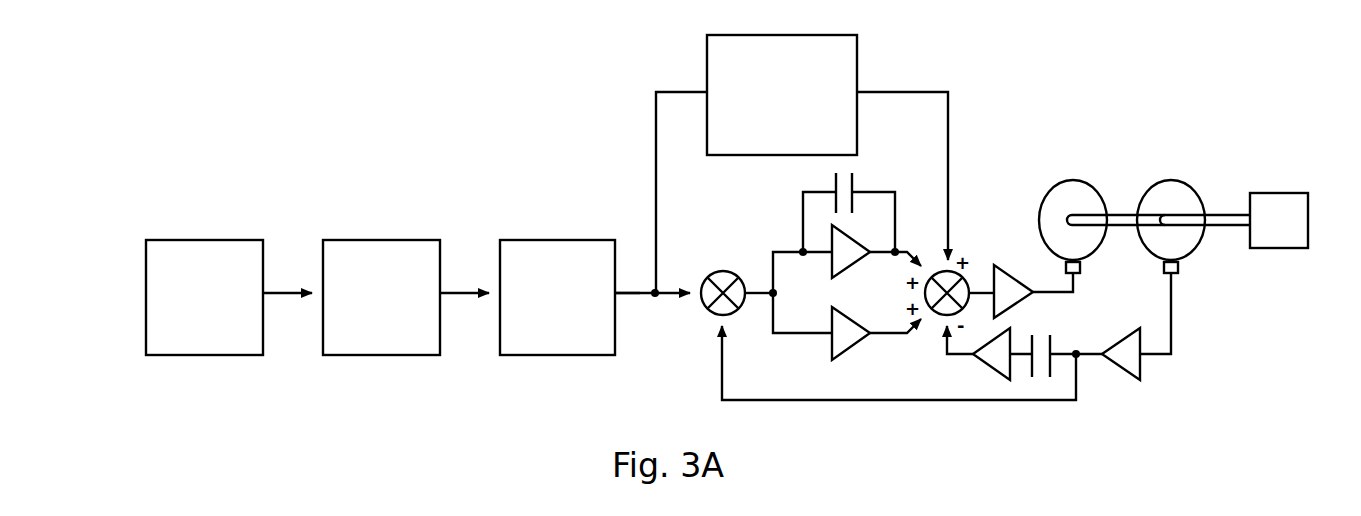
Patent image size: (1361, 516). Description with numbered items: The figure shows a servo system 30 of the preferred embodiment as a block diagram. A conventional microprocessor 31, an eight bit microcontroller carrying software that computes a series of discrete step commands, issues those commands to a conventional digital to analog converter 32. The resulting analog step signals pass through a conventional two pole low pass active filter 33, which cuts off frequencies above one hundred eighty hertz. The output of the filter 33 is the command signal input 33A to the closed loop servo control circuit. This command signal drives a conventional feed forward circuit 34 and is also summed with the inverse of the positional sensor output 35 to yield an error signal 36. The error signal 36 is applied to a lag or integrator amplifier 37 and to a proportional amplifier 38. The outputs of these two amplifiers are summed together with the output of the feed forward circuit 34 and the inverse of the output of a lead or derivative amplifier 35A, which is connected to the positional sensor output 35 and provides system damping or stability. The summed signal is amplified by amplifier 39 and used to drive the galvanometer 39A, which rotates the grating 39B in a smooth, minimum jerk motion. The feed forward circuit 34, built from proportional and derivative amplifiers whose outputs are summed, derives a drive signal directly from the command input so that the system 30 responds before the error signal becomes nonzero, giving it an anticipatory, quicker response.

The servo system 30 is at (346, 398).
The microprocessor 31 is at (213, 240).
The digital to analog converter 32 is at (378, 240).
The low pass active filter 33 is at (556, 240).
The command signal input 33A is at (632, 295).
The feed forward circuit 34 is at (857, 52).
The positional sensor output 35 is at (1171, 332).
The lead amplifier 35A is at (987, 368).
The error signal 36 is at (744, 286).
The integrator amplifier 37 is at (855, 243).
The proportional amplifier 38 is at (855, 323).
The amplifier 39 is at (1006, 265).
The galvanometer 39A is at (1087, 183).
The grating 39B is at (1282, 193).